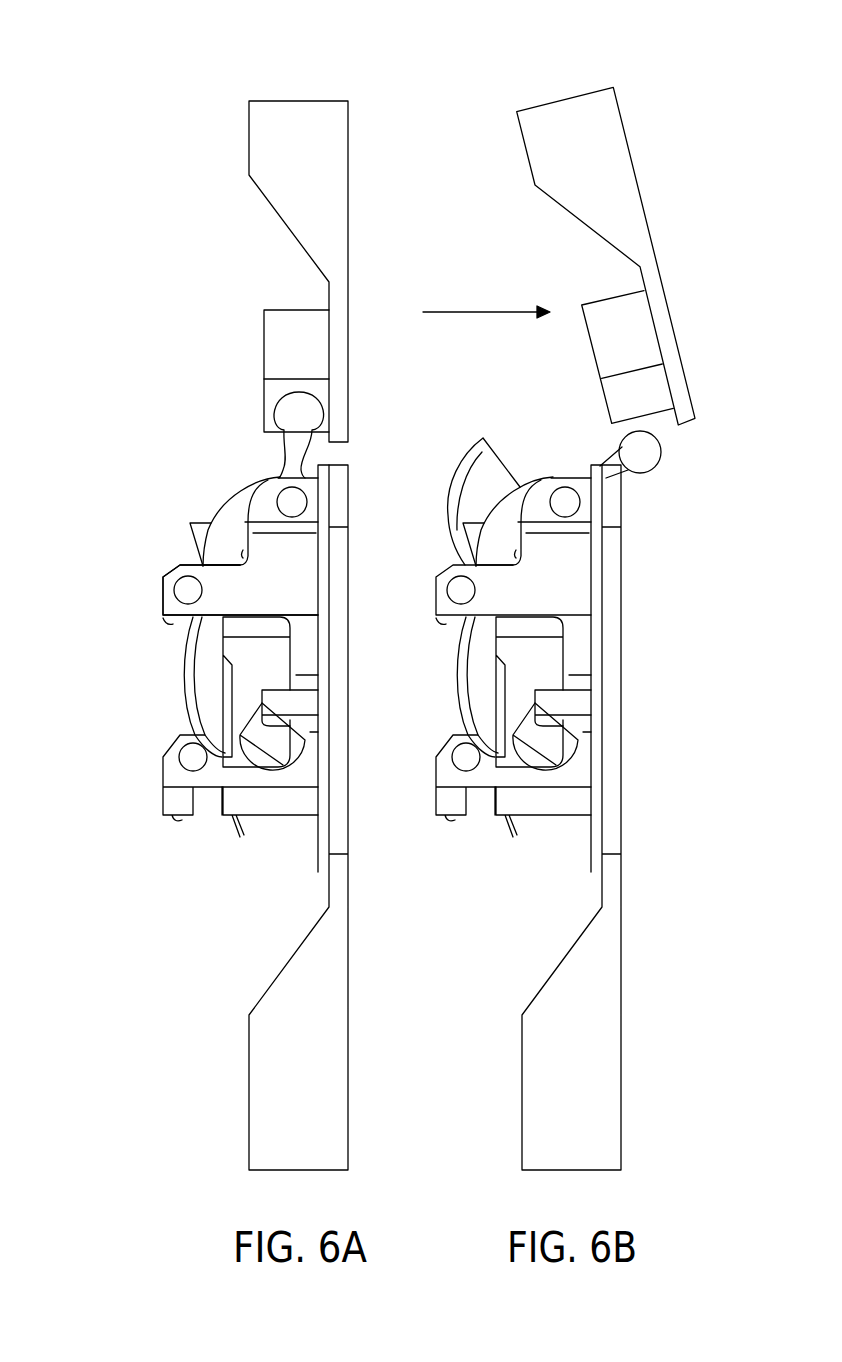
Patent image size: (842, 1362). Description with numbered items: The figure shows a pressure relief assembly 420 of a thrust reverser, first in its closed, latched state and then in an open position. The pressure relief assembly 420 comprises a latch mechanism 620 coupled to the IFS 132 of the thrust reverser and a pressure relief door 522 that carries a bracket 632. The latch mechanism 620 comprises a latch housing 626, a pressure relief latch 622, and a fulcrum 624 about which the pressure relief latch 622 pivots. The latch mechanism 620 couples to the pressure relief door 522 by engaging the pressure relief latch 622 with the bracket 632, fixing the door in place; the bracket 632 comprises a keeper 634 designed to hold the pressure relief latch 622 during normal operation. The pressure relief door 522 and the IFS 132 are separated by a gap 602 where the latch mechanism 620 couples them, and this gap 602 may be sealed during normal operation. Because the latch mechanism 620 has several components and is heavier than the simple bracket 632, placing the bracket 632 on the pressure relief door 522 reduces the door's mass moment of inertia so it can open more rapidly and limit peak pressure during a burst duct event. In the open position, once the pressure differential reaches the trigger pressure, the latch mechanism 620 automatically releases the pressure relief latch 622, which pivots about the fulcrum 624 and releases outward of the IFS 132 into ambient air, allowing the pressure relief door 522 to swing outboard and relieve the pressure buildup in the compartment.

In FIG. 6A, the IFS 132 is at (290, 1085).
In FIG. 6B, the IFS 132 is at (583, 1096).
In FIG. 6A, the pressure relief assembly 420 is at (194, 289).
In FIG. 6B, the pressure relief assembly 420 is at (569, 225).
In FIG. 6A, the pressure relief door 522 is at (308, 185).
In FIG. 6B, the pressure relief door 522 is at (590, 172).
In FIG. 6A, the gap 602 is at (315, 452).
In FIG. 6A, the latch mechanism 620 is at (245, 662).
In FIG. 6B, the latch mechanism 620 is at (597, 651).
In FIG. 6A, the pressure relief latch 622 is at (298, 407).
In FIG. 6B, the pressure relief latch 622 is at (632, 452).
In FIG. 6A, the fulcrum 624 is at (295, 504).
In FIG. 6B, the fulcrum 624 is at (565, 502).
In FIG. 6A, the latch housing 626 is at (263, 585).
In FIG. 6A, the bracket 632 is at (256, 362).
In FIG. 6A, the keeper 634 is at (285, 385).